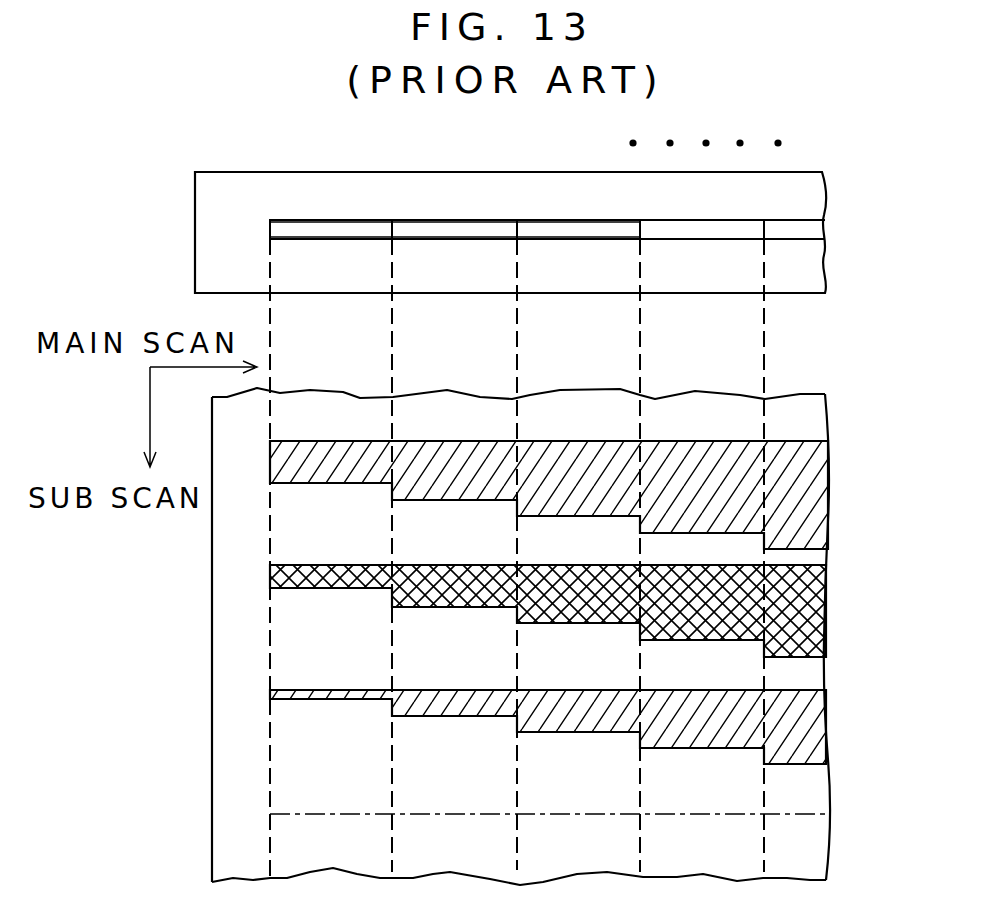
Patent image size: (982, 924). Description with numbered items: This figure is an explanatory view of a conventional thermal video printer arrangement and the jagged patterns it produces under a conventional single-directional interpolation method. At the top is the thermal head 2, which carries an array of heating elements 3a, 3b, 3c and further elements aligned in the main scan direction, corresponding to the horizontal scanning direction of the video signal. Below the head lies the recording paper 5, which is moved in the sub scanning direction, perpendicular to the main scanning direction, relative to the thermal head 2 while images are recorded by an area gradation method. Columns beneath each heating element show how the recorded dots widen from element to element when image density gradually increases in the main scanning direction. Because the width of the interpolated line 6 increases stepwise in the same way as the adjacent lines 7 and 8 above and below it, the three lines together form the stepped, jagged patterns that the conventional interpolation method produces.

The thermal head 2 is at (178, 212).
The heating element 3a is at (333, 228).
The heating element 3b is at (458, 228).
The heating element 3c is at (577, 228).
The recording paper 5 is at (228, 632).
The interpolated line 6 is at (846, 567).
The adjacent line 7 is at (846, 442).
The adjacent line 8 is at (846, 692).